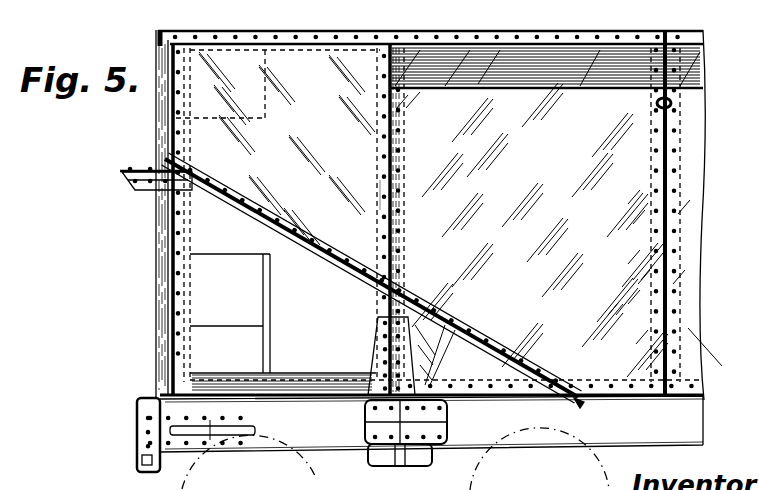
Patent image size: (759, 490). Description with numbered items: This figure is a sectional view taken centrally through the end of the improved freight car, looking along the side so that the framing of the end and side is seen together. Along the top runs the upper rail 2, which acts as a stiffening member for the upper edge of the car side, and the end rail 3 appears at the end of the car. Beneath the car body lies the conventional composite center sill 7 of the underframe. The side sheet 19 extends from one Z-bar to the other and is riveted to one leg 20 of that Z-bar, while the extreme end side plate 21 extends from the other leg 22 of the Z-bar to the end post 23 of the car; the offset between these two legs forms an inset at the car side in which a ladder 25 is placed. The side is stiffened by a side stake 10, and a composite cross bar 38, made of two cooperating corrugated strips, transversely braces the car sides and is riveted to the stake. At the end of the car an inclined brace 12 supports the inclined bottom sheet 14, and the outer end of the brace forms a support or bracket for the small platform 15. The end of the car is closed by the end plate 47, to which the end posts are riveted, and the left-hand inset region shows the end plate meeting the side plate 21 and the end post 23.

The upper rail 2 is at (585, 24).
The end rail 3 is at (166, 34).
The composite center sill 7 is at (318, 436).
The side stake 10 is at (678, 228).
The inclined brace 12 is at (147, 188).
The inclined bottom sheet 14 is at (300, 268).
The small platform 15 is at (138, 170).
The side sheet 19 is at (540, 230).
The leg of the Z-bar 20 is at (404, 224).
The extreme end side plate 21 is at (287, 150).
The other leg of the Z-bar 22 is at (383, 196).
The end post 23 is at (183, 248).
The ladder 25 is at (232, 255).
The composite cross bar 38 is at (670, 104).
The end plate 47 is at (172, 122).